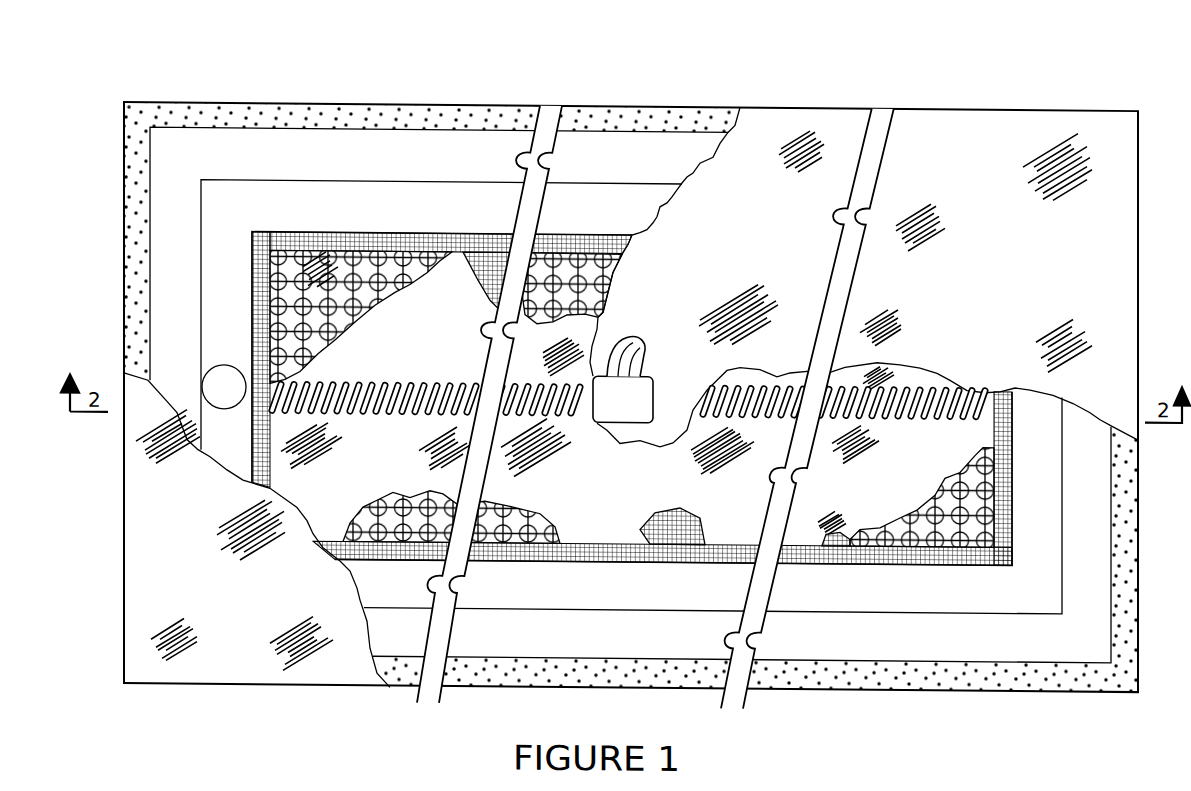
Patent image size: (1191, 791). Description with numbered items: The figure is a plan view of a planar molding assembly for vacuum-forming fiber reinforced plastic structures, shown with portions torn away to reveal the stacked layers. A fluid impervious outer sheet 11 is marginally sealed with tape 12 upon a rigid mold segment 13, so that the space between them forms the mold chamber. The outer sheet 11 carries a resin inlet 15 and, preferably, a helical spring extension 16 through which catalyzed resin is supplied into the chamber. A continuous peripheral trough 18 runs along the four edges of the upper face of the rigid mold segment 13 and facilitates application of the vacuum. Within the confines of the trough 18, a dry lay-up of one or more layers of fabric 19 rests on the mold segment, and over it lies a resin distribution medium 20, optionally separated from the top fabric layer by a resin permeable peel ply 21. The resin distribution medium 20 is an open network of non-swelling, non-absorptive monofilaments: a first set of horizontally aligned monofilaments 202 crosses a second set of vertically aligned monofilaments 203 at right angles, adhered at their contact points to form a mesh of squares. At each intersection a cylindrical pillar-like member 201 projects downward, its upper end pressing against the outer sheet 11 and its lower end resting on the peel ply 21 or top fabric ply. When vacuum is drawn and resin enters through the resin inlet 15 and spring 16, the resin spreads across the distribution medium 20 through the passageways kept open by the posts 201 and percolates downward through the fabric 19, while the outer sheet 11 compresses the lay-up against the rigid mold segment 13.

The fluid impervious outer sheet 11 is at (933, 120).
The tape 12 is at (155, 111).
The rigid mold segment 13 is at (683, 556).
The resin inlet 15 is at (646, 336).
The helical spring extension 16 is at (553, 376).
The continuous peripheral trough 18 is at (902, 585).
The fabric 19 is at (578, 326).
The resin distribution medium 20 is at (527, 303).
The pillar-like member 201 is at (316, 277).
The first set of monofilaments 202 is at (389, 256).
The second set of monofilaments 203 is at (253, 284).
The resin permeable peel ply 21 is at (453, 261).